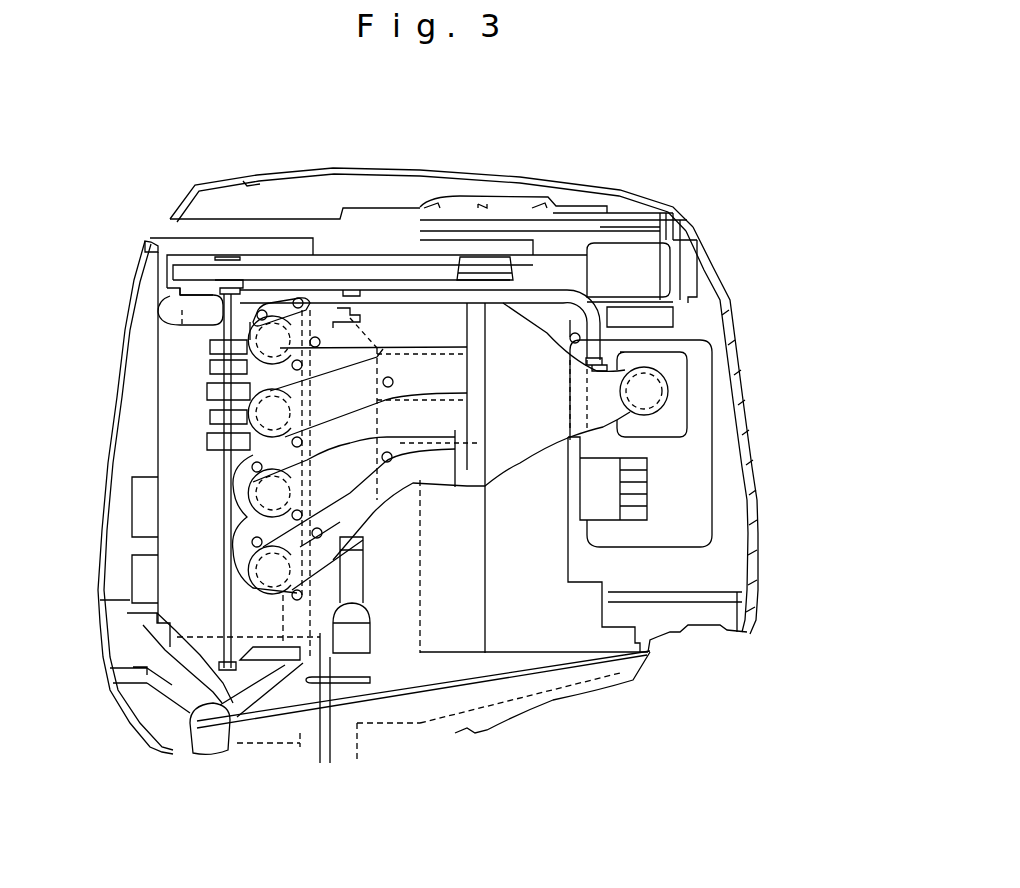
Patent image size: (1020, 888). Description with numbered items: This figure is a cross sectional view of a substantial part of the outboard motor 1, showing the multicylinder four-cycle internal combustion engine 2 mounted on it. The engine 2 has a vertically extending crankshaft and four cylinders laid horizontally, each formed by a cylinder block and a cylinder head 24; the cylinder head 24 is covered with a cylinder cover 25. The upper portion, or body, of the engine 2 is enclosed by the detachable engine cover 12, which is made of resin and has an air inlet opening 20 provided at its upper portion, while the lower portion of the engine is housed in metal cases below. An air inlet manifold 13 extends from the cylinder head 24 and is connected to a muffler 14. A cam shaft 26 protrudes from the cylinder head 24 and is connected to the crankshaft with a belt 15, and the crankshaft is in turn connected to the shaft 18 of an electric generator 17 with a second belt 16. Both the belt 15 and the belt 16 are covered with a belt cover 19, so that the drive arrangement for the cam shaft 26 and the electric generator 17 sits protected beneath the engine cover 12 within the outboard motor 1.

The outboard motor 1 is at (520, 160).
The internal combustion engine 2 is at (145, 437).
The engine cover 12 is at (726, 274).
The air inlet manifold 13 is at (443, 422).
The muffler 14 is at (688, 401).
The belt 15 is at (341, 266).
The belt 16 is at (662, 226).
The electric generator 17 is at (648, 268).
The shaft 18 is at (625, 212).
The belt cover 19 is at (690, 257).
The air inlet opening 20 is at (178, 233).
The cylinder head 24 is at (278, 650).
The cylinder cover 25 is at (167, 305).
The cam shaft 26 is at (180, 327).